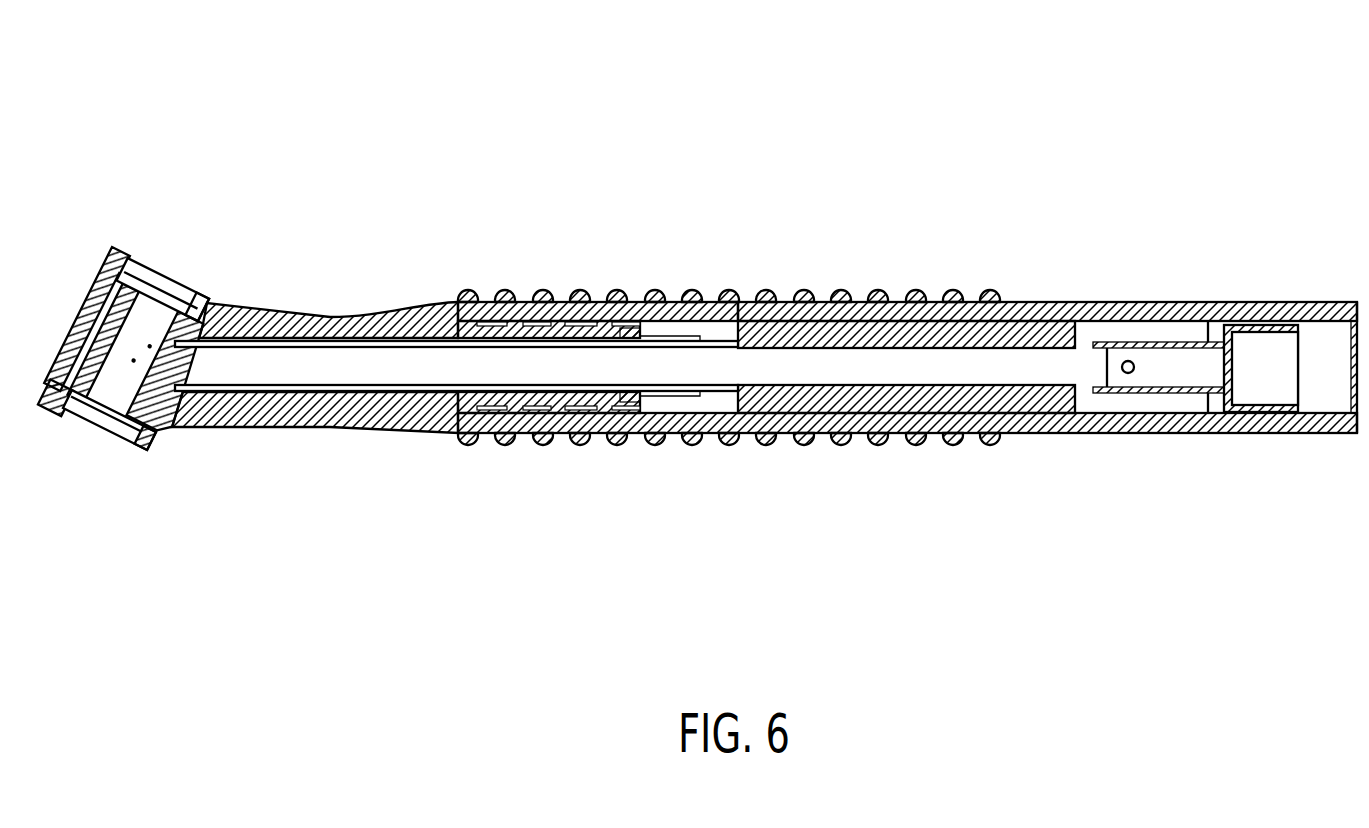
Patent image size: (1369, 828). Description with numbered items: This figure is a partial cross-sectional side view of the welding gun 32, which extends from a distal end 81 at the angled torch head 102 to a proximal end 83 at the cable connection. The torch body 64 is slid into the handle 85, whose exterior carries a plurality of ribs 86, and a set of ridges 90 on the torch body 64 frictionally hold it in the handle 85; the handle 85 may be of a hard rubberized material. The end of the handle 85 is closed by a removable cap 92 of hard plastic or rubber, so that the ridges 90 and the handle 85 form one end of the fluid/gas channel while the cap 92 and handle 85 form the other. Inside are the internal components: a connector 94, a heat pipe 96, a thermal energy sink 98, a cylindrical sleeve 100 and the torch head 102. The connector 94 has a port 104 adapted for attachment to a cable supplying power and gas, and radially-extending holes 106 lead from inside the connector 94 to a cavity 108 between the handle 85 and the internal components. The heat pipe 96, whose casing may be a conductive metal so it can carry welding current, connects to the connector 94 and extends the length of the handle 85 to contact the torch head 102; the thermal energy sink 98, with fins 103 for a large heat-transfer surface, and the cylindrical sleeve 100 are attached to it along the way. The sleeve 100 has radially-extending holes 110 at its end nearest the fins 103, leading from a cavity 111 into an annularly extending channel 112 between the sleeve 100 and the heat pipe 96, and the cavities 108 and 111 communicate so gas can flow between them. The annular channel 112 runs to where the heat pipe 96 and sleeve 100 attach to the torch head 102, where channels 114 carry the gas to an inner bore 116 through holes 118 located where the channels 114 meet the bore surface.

The welding gun 32 is at (401, 147).
The torch body 64 is at (393, 429).
The distal end 81 is at (125, 558).
The proximal end 83 is at (1333, 513).
The handle 85 is at (775, 303).
The ribs 86 is at (802, 434).
The set of ridges 90 is at (527, 400).
The removable cap 92 is at (1265, 303).
The connector 94 is at (1196, 342).
The heat pipe 96 is at (1038, 367).
The thermal energy sink 98 is at (947, 396).
The cylindrical sleeve 100 is at (409, 314).
The torch head 102 is at (207, 296).
The fins 103 is at (1007, 303).
The port 104 is at (1255, 372).
The radially-extending holes 106 is at (1131, 340).
The cavity 108 is at (1128, 398).
The radially-extending holes 110 is at (672, 392).
The cavity 111 is at (690, 303).
The annularly extending channel 112 is at (318, 429).
The channels 114 is at (170, 430).
The inner bore 116 is at (142, 325).
The holes 118 is at (140, 380).